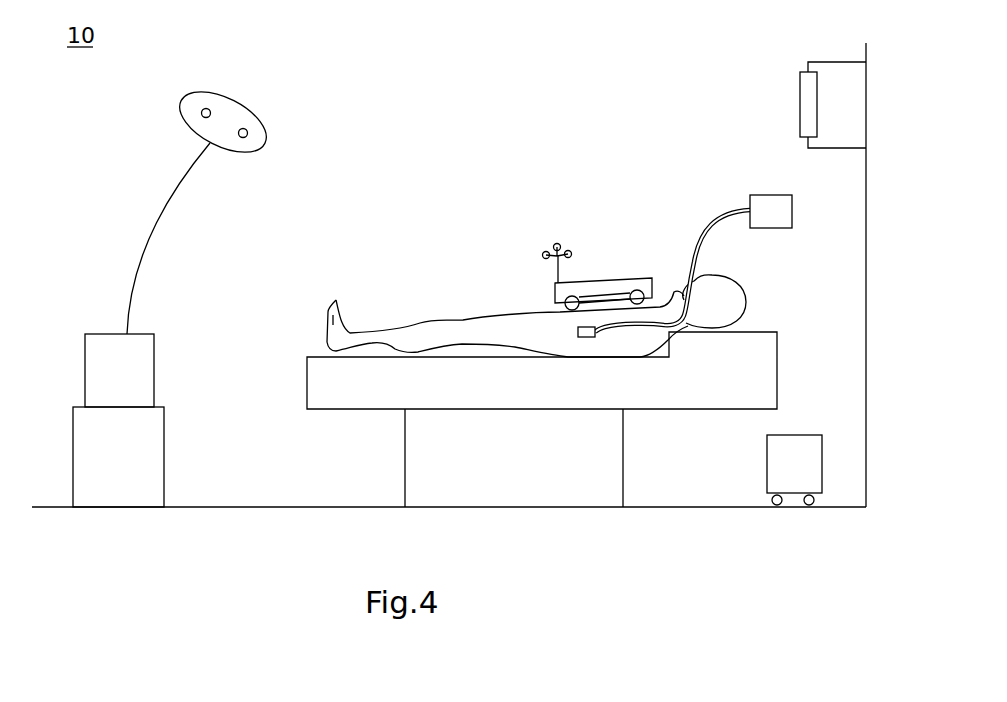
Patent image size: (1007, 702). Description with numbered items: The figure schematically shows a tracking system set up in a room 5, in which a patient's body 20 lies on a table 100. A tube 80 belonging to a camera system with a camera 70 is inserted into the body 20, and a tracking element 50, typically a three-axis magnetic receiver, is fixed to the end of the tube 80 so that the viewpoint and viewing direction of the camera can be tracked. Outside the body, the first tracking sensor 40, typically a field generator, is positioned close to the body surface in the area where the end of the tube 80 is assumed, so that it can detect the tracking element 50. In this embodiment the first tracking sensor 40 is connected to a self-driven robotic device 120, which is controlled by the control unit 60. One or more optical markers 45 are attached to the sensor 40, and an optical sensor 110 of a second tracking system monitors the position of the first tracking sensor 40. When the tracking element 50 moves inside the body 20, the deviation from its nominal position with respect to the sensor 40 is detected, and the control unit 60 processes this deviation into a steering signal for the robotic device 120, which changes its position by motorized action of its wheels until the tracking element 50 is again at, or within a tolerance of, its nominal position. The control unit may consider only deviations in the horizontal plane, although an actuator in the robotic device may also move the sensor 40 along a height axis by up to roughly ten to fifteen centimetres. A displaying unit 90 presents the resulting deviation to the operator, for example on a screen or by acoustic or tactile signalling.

The room 5 is at (262, 512).
The body 20 is at (332, 305).
The first tracking sensor 40 is at (622, 285).
The optical markers 45 is at (555, 233).
The tracking element 50 is at (588, 337).
The control unit 60 is at (800, 452).
The camera 70 is at (770, 195).
The tube 80 is at (695, 263).
The displaying unit 90 is at (807, 98).
The table 100 is at (765, 353).
The optical sensor 110 is at (237, 108).
The self-driven robotic device 120 is at (598, 288).